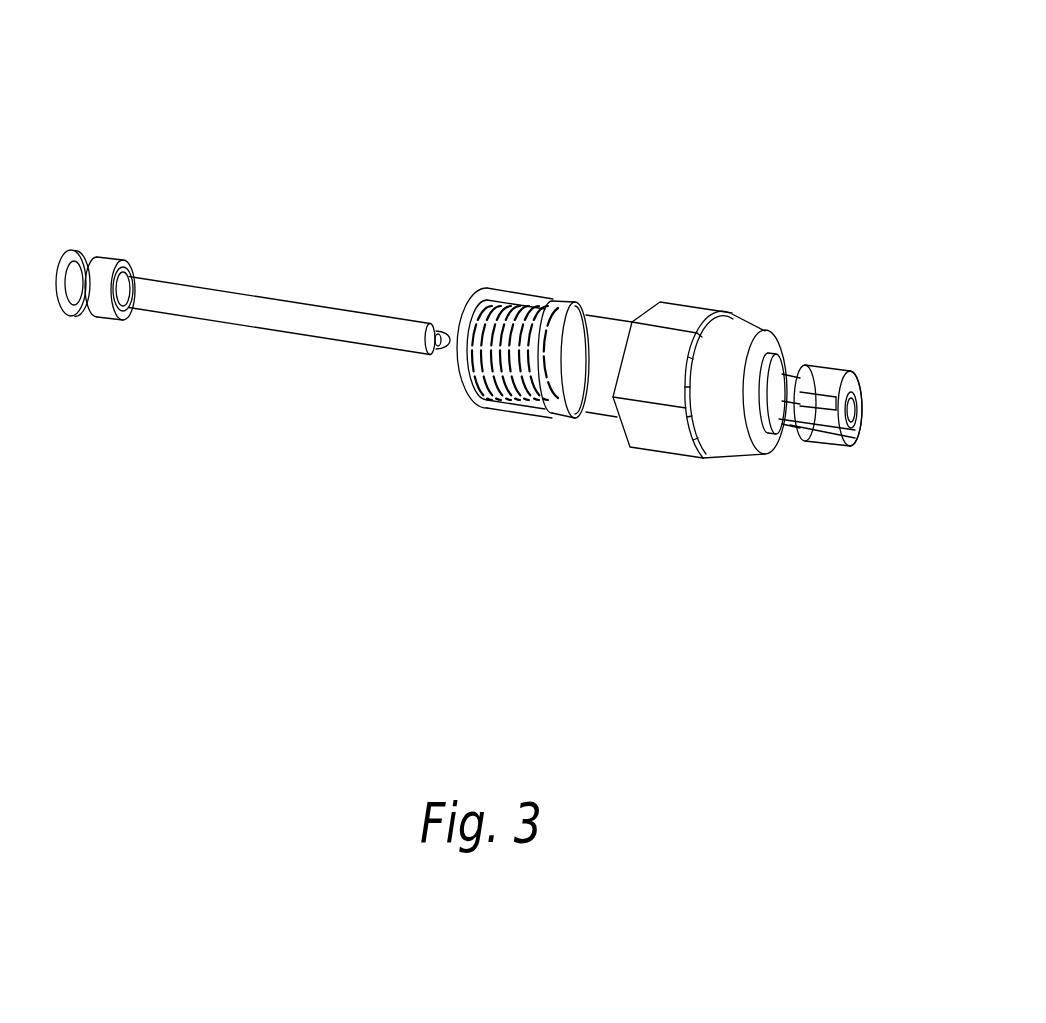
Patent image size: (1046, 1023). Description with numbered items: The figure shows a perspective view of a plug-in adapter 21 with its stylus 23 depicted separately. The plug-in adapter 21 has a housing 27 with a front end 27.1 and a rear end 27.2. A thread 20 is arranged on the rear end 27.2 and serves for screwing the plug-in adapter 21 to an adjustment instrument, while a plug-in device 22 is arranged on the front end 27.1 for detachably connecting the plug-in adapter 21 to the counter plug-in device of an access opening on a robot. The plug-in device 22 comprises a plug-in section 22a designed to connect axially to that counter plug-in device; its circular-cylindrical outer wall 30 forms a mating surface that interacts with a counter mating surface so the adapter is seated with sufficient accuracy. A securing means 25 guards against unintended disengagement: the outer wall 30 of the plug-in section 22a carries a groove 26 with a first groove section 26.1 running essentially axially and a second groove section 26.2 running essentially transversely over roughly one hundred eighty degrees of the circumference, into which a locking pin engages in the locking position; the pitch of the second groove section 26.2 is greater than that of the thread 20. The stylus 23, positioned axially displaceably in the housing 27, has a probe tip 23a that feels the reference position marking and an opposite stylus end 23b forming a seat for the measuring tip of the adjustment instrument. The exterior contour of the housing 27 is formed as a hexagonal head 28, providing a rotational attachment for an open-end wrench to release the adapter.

The thread 20 is at (513, 324).
The plug-in adapter 21 is at (633, 152).
The plug-in device 22 is at (737, 480).
The plug-in section 22a is at (807, 432).
The stylus 23 is at (263, 313).
The probe tip 23a is at (443, 329).
The stylus end 23b is at (103, 275).
The securing means 25 is at (789, 353).
The groove 26 is at (788, 410).
The first groove section 26.1 is at (830, 416).
The second groove section 26.2 is at (803, 367).
The housing 27 is at (578, 407).
The front end 27.1 is at (858, 448).
The rear end 27.2 is at (447, 412).
The hexagonal head 28 is at (631, 433).
The circular-cylindrical outer wall 30 is at (822, 377).